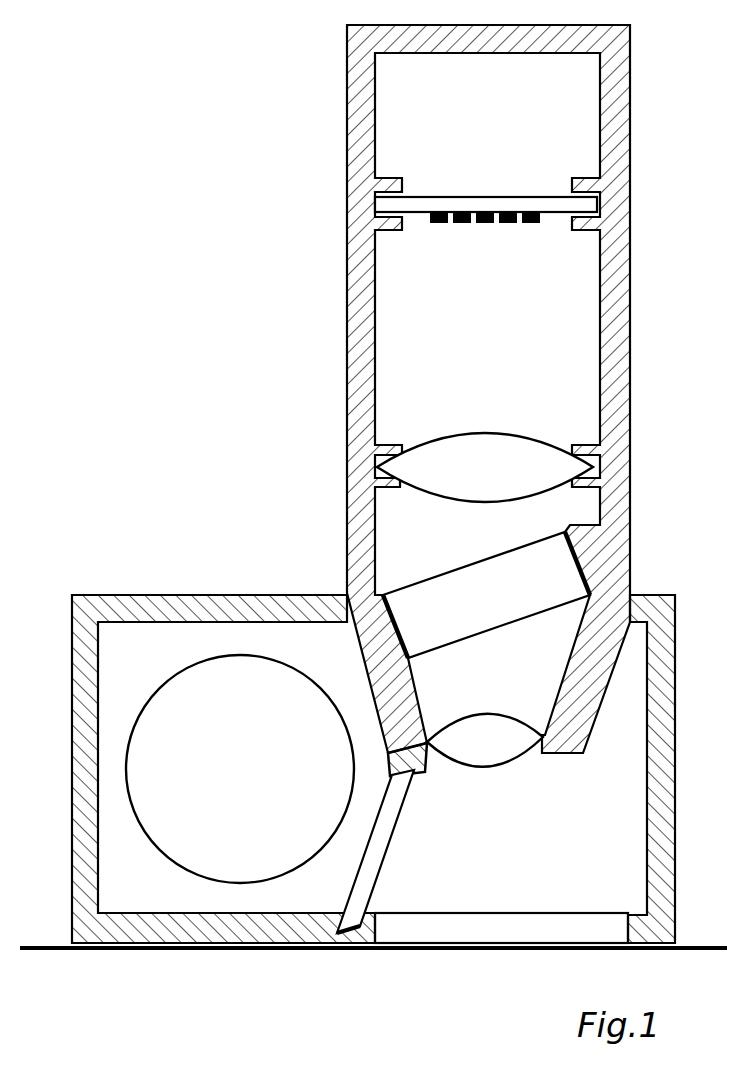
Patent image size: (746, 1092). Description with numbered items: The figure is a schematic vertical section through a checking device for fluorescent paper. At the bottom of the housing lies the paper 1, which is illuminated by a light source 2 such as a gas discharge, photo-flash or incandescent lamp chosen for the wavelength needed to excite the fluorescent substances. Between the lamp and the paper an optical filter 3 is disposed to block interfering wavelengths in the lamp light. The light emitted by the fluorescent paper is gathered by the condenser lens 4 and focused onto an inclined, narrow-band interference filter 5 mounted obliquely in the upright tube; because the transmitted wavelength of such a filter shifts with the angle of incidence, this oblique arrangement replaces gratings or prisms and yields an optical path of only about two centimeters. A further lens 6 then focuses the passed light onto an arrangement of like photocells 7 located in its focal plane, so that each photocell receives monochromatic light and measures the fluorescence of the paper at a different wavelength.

The paper 1 is at (373, 771).
The light source 2 is at (240, 769).
The optical filter 3 is at (382, 838).
The condenser lens 4 is at (485, 740).
The interference filter 5 is at (486, 595).
The lens 6 is at (485, 467).
The photocells 7 is at (550, 228).